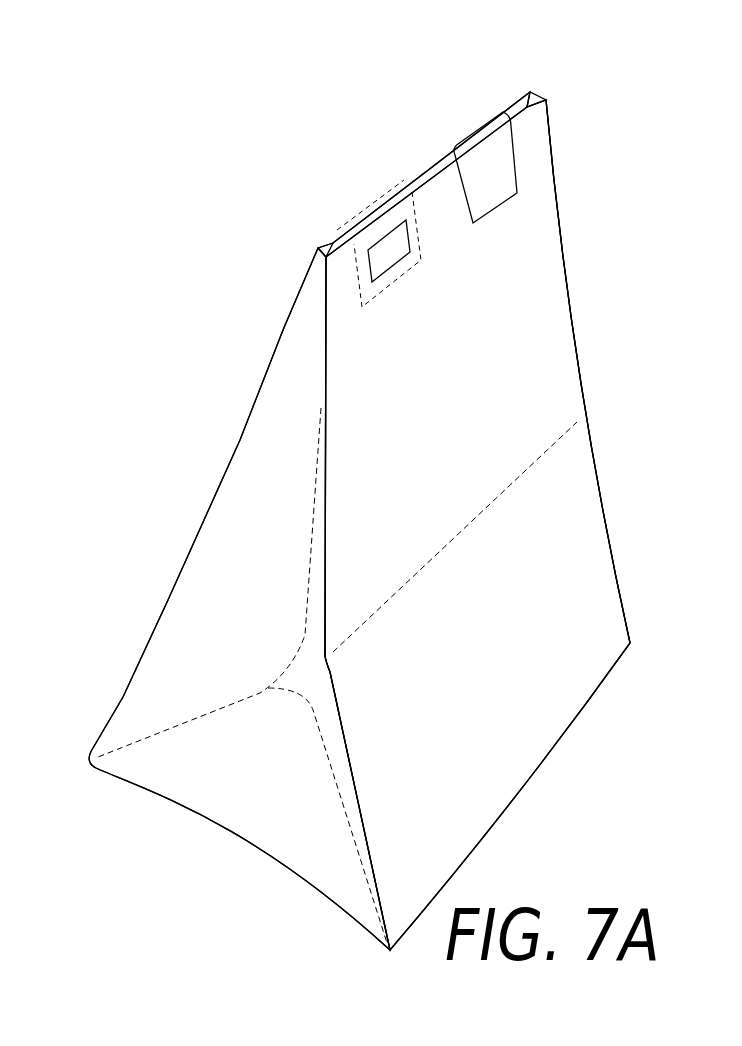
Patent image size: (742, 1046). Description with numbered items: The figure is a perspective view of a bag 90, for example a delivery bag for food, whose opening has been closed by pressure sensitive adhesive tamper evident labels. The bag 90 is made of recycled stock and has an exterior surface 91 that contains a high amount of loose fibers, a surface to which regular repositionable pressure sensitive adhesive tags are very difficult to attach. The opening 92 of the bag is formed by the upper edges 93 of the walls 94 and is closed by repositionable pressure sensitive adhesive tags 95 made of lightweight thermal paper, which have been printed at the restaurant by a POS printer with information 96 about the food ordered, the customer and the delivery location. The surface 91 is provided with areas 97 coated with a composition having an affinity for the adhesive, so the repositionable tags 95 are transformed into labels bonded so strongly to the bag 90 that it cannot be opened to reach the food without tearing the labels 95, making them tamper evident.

The bag 90 is at (607, 362).
The exterior surface 91 is at (577, 567).
The opening 92 is at (330, 244).
The upper edges 93 is at (528, 96).
The walls 94 is at (208, 500).
The repositionable pressure sensitive adhesive tags 95 is at (472, 137).
The information 96 is at (514, 162).
The areas 97 is at (392, 257).